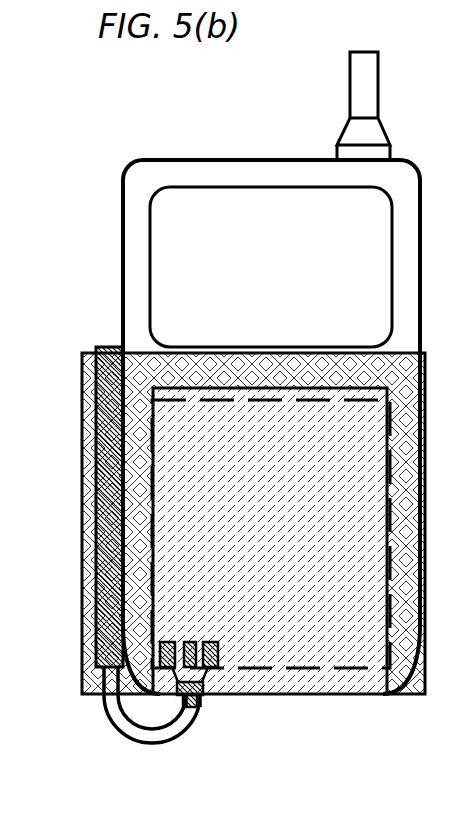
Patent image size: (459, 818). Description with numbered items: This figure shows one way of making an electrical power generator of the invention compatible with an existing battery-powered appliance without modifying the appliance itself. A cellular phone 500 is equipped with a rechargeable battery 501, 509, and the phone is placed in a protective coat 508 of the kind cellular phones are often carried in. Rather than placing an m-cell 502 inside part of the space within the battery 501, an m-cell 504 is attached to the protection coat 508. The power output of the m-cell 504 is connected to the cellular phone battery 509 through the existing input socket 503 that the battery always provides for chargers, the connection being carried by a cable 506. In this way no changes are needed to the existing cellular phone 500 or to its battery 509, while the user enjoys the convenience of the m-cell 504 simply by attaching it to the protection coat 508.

The cellular phone 500 is at (213, 175).
The rechargeable battery 501 is at (193, 541).
The m-cell 502 is at (195, 523).
The input socket 503 is at (198, 704).
The m-cell 504 is at (88, 553).
The cable 506 is at (115, 720).
The protective coat 508 is at (126, 350).
The cellular phone battery 509 is at (172, 430).